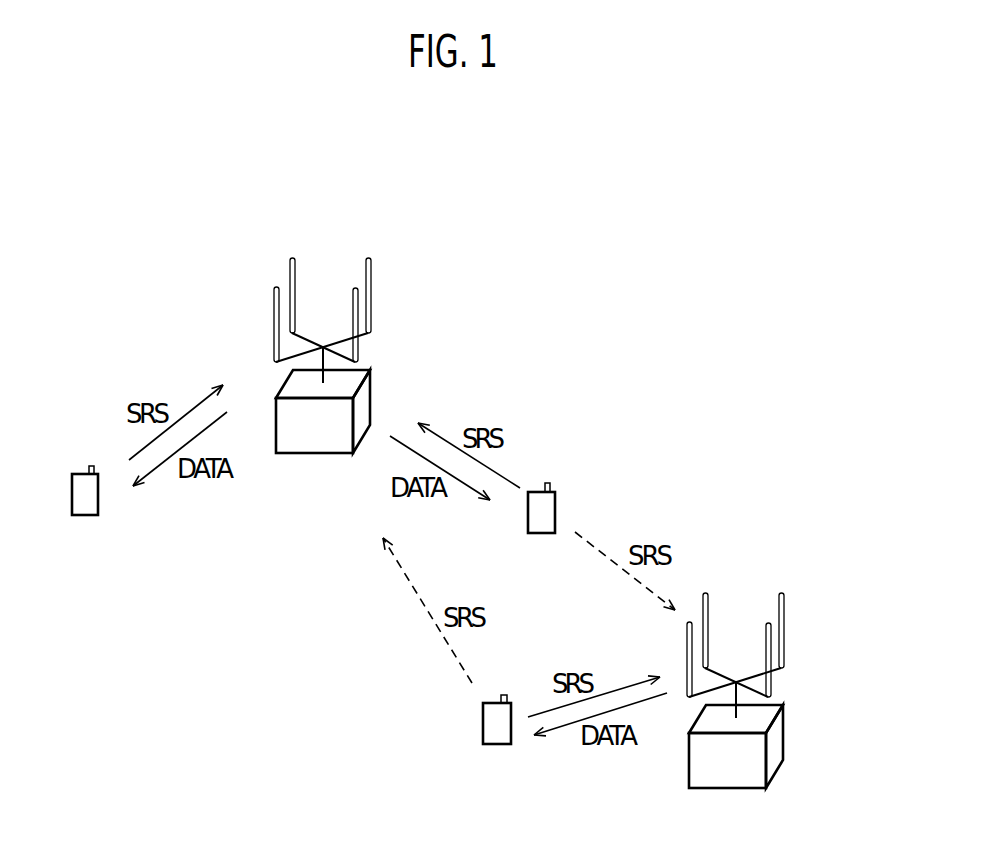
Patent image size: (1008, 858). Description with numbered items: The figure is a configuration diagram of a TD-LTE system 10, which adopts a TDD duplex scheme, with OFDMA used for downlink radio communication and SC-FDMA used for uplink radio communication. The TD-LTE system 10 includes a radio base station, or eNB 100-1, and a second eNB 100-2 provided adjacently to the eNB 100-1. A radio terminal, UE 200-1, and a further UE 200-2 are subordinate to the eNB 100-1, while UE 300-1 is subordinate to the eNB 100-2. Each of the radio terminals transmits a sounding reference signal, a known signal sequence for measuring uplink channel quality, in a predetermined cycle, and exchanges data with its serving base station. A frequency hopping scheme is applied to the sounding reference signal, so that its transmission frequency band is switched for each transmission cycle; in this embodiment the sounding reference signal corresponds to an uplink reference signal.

The TD-LTE system 10 is at (635, 237).
The radio base station (eNB) 100-1 is at (370, 392).
The eNB 100-2 is at (783, 733).
The radio terminal (UE) 200-1 is at (555, 510).
The UE 200-2 is at (90, 515).
The UE 300-1 is at (502, 744).